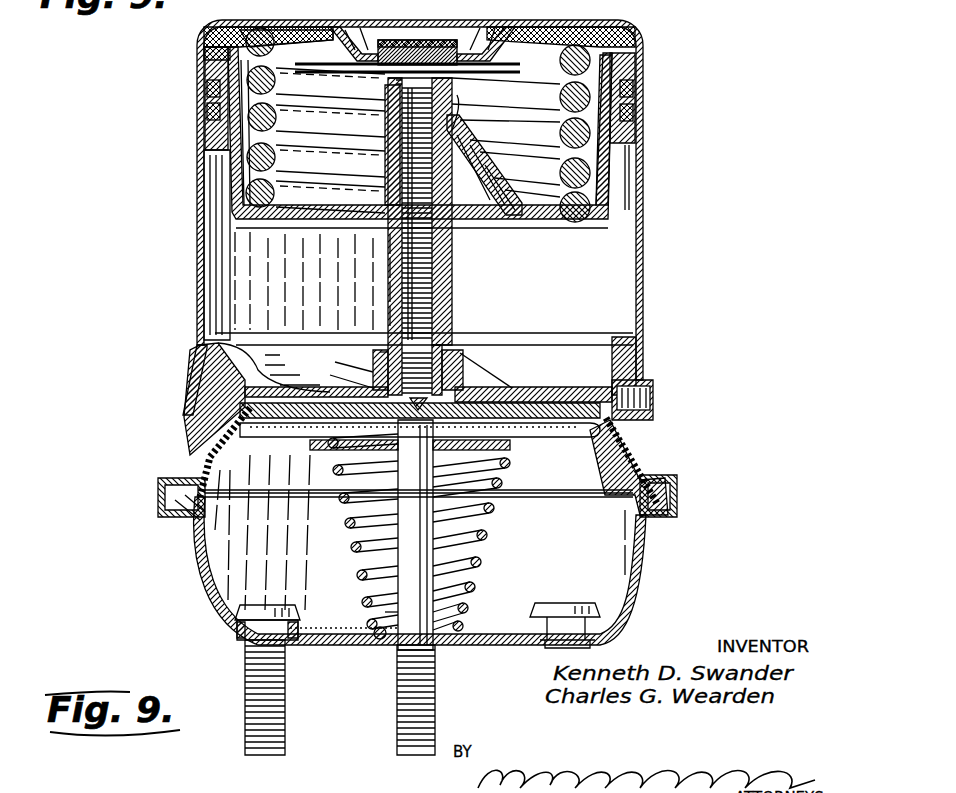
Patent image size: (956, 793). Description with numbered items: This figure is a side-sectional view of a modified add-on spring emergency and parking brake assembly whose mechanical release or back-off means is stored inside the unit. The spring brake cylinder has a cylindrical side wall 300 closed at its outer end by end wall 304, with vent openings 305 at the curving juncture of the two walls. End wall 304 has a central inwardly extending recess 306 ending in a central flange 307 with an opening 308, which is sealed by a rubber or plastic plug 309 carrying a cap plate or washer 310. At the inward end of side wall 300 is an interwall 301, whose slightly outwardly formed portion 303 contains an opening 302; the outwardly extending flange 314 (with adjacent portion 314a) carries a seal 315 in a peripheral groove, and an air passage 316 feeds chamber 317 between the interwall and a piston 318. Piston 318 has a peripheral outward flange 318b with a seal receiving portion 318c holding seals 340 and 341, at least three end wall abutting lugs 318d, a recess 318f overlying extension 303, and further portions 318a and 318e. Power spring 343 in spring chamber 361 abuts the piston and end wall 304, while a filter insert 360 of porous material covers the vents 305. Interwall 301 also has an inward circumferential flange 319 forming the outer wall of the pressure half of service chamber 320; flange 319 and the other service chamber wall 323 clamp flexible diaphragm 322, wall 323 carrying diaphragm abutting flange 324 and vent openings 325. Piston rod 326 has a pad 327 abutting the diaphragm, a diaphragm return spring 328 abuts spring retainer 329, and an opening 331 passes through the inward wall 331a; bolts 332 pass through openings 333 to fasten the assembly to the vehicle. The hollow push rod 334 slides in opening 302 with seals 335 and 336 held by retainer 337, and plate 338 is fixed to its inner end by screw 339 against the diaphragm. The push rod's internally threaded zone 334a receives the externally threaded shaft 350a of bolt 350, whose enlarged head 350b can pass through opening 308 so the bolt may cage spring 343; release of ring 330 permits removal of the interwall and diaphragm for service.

The cylindrical side wall 300 is at (643, 190).
The interwall 301 is at (242, 388).
The opening 302 is at (393, 344).
The outwardly formed portion 303 is at (462, 360).
The end wall 304 is at (505, 27).
The vent openings 305 is at (640, 26).
The recess 306 is at (372, 30).
The central flange 307 is at (403, 12).
The opening 308 is at (458, 80).
The plug 309 is at (435, 38).
The cap plate or washer 310 is at (440, 10).
The outwardly extending flange 314 is at (228, 362).
The flange wedge 314a is at (190, 385).
The seal 315 is at (200, 347).
The air passage 316 is at (655, 400).
The chamber 317 is at (545, 277).
The piston 318 is at (538, 222).
The cup inner wall 318a is at (383, 112).
The peripheral outward flange 318b is at (228, 183).
The seal receiving portion 318c is at (205, 72).
The end wall abutting lugs 318d is at (238, 28).
The cup right flange 318e is at (616, 27).
The recess 318f is at (480, 190).
The inward circumferential flange portion 319 is at (205, 456).
The service chamber 320 is at (200, 440).
The flexible diaphragm 322 is at (228, 500).
The service chamber wall 323 is at (655, 517).
The diaphragm abutting flange 324 is at (185, 520).
The vent openings 325 is at (195, 560).
The piston rod 326 is at (385, 598).
The pad 327 is at (550, 438).
The diaphragm return spring 328 is at (492, 516).
The spring retainer 329 is at (490, 460).
The ring 330 is at (158, 496).
The opening 331 is at (395, 652).
The inward wall 331a is at (292, 646).
The bolts 332 is at (250, 670).
The openings 333 is at (240, 640).
The push rod 334 is at (445, 272).
The internally threaded zone 334a is at (462, 124).
The seal means 335 is at (380, 354).
The seal means 336 is at (352, 366).
The retainer 337 is at (348, 380).
The plate or disc 338 is at (500, 391).
The screw 339 is at (440, 336).
The seal 340 is at (207, 90).
The seal 341 is at (207, 115).
The power spring 343 is at (276, 160).
The bolt 350 is at (432, 286).
The externally threaded shaft portion 350a is at (432, 241).
The enlarged head 350b is at (403, 75).
The filter insert 360 is at (305, 30).
The spring chamber 361 is at (418, 139).